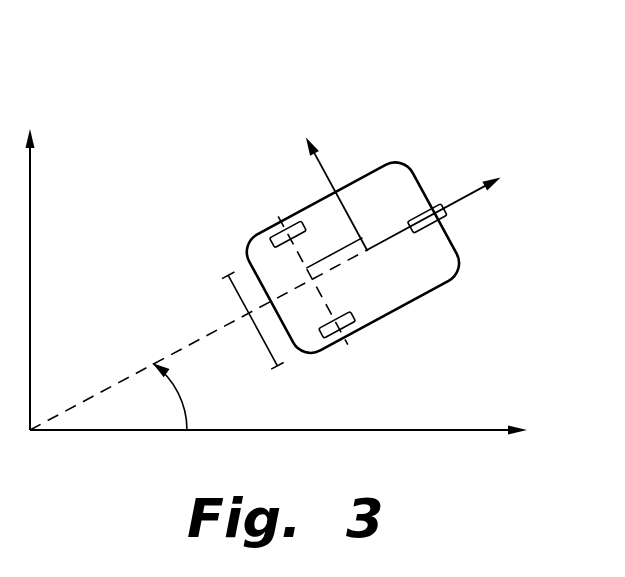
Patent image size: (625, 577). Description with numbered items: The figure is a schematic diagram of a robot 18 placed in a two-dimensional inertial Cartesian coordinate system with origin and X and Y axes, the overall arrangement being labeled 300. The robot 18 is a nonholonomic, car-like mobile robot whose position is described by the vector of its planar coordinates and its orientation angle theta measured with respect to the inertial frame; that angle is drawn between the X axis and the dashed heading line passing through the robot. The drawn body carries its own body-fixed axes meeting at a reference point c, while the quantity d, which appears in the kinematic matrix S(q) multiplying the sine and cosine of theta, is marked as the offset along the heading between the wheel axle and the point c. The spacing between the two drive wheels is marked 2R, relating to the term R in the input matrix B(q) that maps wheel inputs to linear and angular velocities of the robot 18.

The mobile base kinematic diagram 300 is at (305, 225).
The robot 18 is at (455, 243).
The wheel separation distance 2R is at (236, 320).
The element d is at (334, 245).
The mobile base reference point c is at (375, 267).